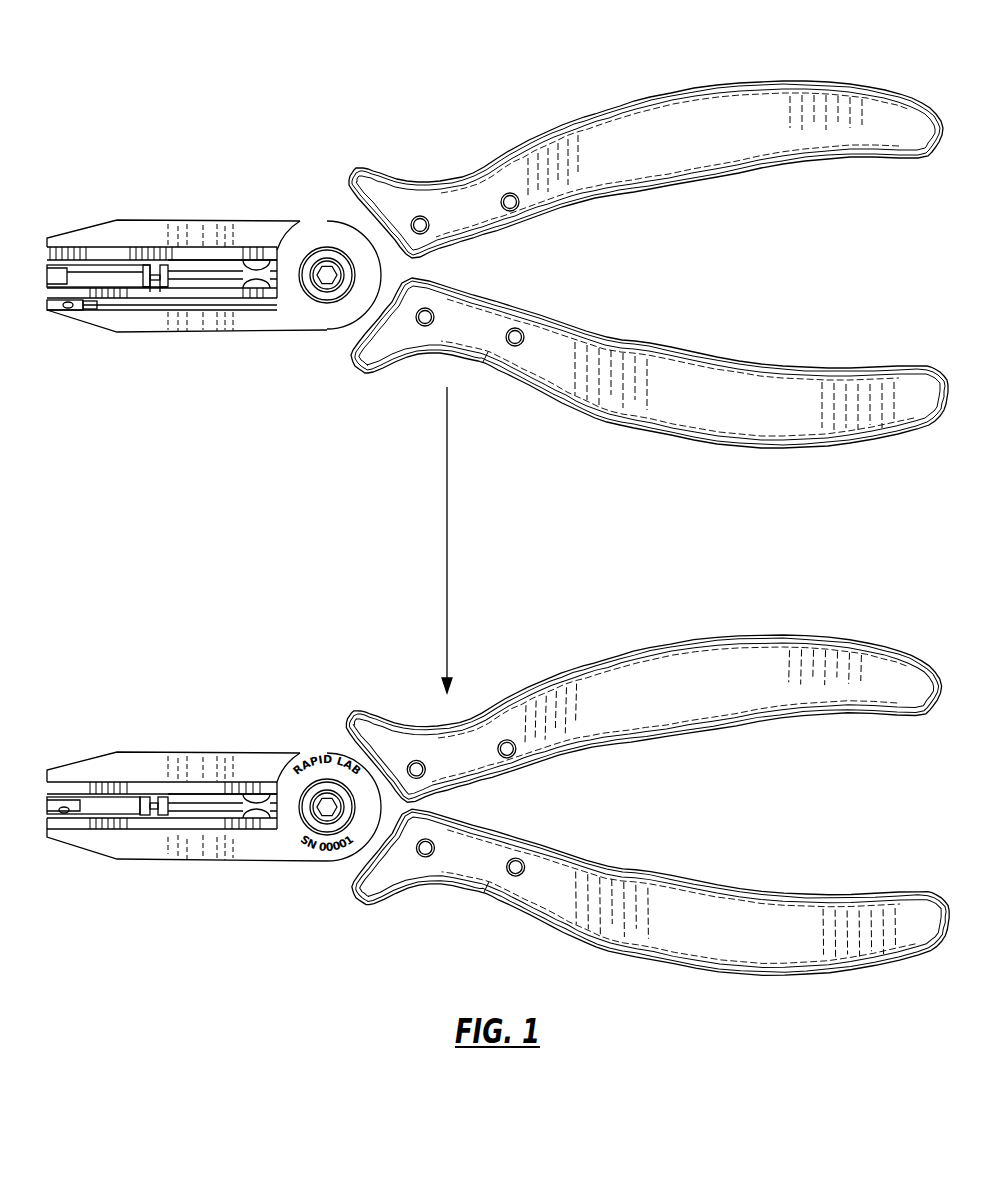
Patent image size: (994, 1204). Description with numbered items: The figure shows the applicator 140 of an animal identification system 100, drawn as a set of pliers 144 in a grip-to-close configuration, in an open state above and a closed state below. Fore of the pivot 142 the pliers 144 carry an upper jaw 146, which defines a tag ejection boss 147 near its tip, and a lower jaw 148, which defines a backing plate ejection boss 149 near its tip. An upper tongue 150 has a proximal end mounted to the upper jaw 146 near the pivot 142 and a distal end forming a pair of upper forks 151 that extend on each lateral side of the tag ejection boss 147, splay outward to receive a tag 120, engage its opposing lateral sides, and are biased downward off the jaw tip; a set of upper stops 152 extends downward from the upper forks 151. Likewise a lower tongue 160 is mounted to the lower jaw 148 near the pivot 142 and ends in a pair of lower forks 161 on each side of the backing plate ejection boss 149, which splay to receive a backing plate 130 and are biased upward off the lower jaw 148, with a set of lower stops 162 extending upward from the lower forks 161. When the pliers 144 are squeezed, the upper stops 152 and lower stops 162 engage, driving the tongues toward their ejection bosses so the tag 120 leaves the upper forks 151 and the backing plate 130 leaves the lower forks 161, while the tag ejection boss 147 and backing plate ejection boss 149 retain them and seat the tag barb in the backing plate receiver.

The animal identification system 100 is at (800, 47).
The tag 120 is at (55, 253).
The backing plate 130 is at (73, 307).
The applicator 140 is at (473, 173).
The pivot 142 is at (327, 285).
The set of pliers 144 is at (483, 363).
The upper jaw 146 is at (235, 228).
The tag ejection boss 147 is at (73, 250).
The lower jaw 148 is at (257, 327).
The backing plate ejection boss 149 is at (85, 310).
The upper tongue 150 is at (98, 216).
The upper forks 151 is at (115, 258).
The upper stops 152 is at (155, 263).
The lower tongue 160 is at (55, 307).
The lower forks 161 is at (51, 354).
The lower stops 162 is at (153, 292).